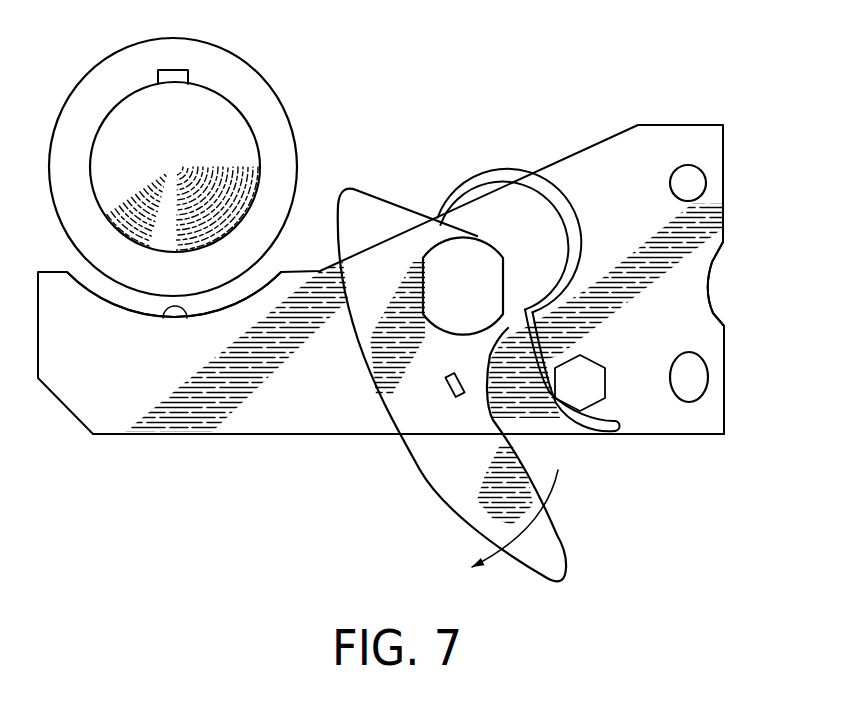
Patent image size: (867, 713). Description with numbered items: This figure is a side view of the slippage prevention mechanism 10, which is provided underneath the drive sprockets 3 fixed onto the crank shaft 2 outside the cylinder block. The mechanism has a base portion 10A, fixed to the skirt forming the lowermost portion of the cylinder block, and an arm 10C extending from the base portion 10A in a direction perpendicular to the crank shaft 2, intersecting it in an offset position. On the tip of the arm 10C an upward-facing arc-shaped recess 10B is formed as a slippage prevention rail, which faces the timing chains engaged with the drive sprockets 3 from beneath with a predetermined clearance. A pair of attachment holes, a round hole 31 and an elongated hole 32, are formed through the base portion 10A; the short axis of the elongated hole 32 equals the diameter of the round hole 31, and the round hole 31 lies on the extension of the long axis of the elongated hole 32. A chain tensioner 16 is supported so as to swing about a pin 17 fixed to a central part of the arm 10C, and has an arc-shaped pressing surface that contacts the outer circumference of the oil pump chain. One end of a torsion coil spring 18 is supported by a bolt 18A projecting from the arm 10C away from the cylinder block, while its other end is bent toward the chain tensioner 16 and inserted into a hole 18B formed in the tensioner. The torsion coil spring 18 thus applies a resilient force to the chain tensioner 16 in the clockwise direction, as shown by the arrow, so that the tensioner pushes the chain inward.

The crank shaft 2 is at (190, 123).
The drive sprockets 3 is at (263, 107).
The slippage prevention mechanism 10 is at (565, 143).
The base portion 10A is at (690, 278).
The arc-shaped recess 10B is at (158, 322).
The arm 10C is at (233, 408).
The chain tensioner 16 is at (473, 500).
The pin 17 is at (463, 278).
The torsion coil spring 18 is at (500, 220).
The bolt 18A is at (585, 387).
The hole 18B is at (448, 392).
The round hole 31 is at (690, 183).
The elongated hole 32 is at (690, 380).